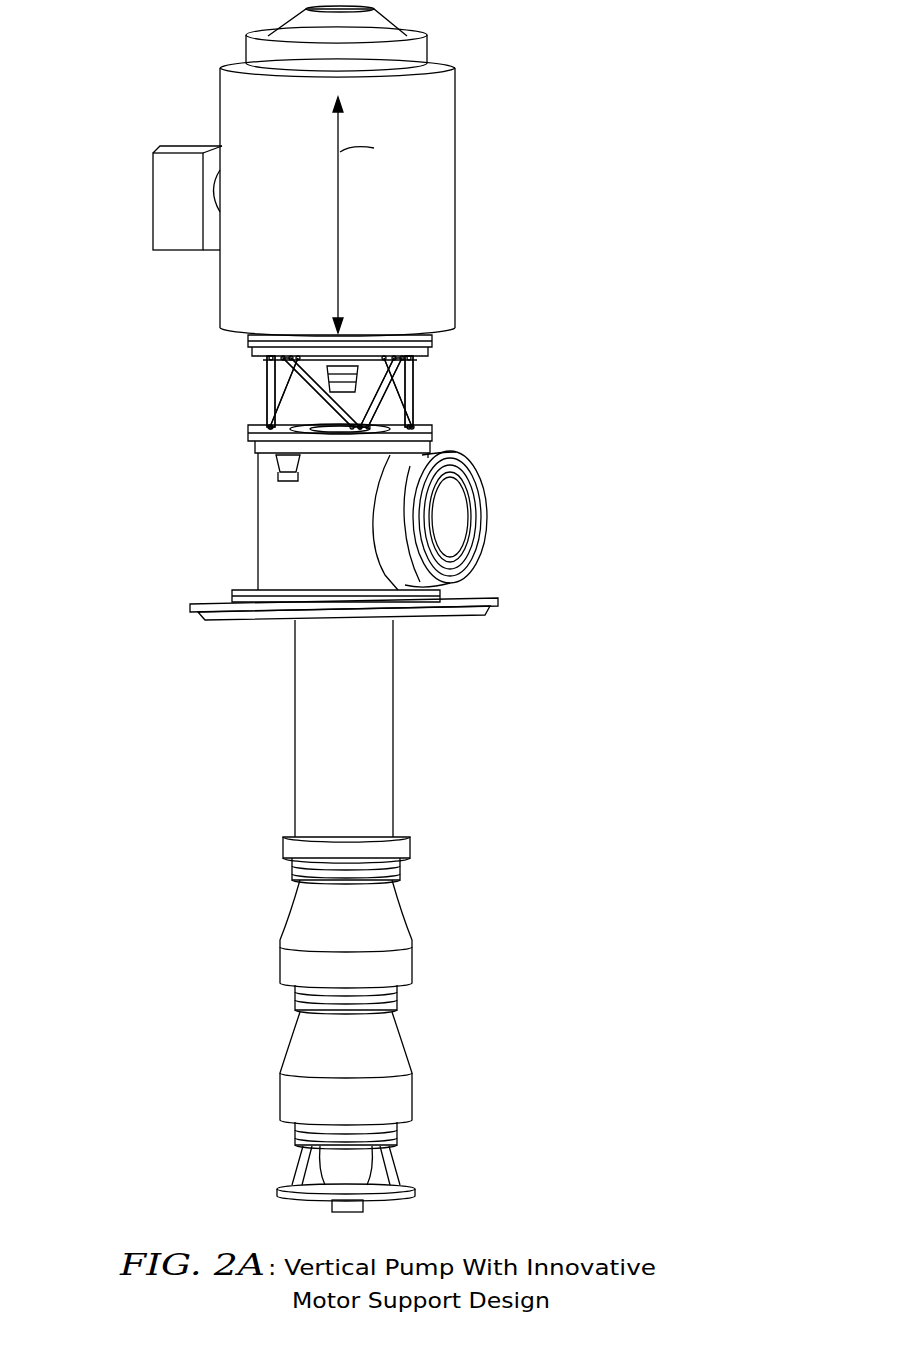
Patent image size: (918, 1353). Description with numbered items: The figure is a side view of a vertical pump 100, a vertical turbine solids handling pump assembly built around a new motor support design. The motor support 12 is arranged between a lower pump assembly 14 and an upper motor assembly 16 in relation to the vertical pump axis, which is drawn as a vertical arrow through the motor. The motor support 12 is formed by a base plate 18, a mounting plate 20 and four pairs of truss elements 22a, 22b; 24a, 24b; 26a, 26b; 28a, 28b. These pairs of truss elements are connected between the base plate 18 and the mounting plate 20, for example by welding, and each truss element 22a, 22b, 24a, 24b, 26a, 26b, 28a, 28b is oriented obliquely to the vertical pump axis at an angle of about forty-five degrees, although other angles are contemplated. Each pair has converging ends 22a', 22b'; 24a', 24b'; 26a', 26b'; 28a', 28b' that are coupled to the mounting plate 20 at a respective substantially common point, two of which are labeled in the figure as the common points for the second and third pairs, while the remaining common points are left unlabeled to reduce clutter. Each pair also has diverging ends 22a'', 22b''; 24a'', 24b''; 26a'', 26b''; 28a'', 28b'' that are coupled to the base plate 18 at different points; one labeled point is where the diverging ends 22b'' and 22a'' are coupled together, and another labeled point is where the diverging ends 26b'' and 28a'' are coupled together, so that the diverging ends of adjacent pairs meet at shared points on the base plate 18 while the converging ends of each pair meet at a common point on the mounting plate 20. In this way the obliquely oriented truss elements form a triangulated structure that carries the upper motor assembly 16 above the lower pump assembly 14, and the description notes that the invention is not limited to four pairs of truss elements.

The vertical pump 100 is at (533, 80).
The upper motor assembly 16 is at (245, 105).
The mounting plate 20 is at (326, 264).
The motor support 12 is at (456, 421).
The lower pump assembly 14 is at (460, 607).
The base plate 18 is at (483, 483).
The truss element 22a is at (265, 390).
The truss element 22b is at (230, 392).
The truss element 24a is at (227, 392).
The truss element 24b is at (201, 400).
The truss element 26a is at (492, 391).
The truss element 26b is at (461, 392).
The truss element 28a is at (473, 384).
The truss element 28b is at (501, 372).
The converging end 22a' is at (204, 331).
The converging end 22b' is at (202, 346).
The converging end 24a' is at (225, 311).
The converging end 24b' is at (296, 311).
The converging end 26a' is at (431, 320).
The converging end 26b' is at (480, 330).
The converging end 28a' is at (403, 291).
The converging end 28b' is at (369, 314).
The diverging end 22a'' is at (258, 481).
The diverging end 22b'' is at (207, 442).
The diverging end 24a'' is at (210, 464).
The diverging end 24b'' is at (221, 543).
The diverging end 26a'' is at (310, 560).
The diverging end 26b'' is at (378, 508).
The diverging end 28a'' is at (324, 503).
The diverging end 28b'' is at (264, 508).